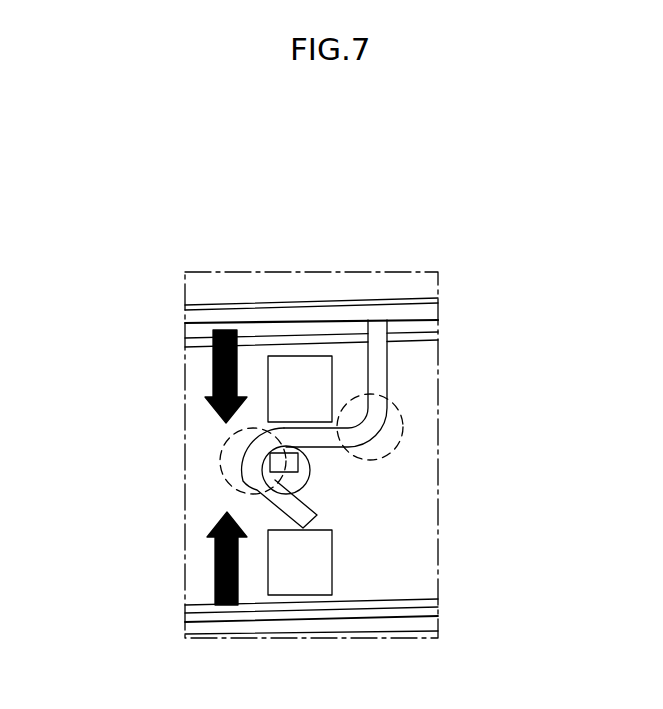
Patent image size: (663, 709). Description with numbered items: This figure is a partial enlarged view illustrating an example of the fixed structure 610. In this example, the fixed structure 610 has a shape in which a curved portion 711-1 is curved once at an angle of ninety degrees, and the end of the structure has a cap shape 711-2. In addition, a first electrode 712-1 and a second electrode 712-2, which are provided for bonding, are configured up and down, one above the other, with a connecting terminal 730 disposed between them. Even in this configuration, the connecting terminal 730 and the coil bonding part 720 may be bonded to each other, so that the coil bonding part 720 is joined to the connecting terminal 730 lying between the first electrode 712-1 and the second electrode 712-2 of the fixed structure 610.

The fixed structure 610 is at (548, 194).
The curved portion 711-1 is at (405, 427).
The cap shape 711-2 is at (222, 452).
The first electrode 712-1 is at (307, 372).
The second electrode 712-2 is at (317, 558).
The coil bonding part 720 is at (297, 458).
The connecting terminal 730 is at (380, 363).